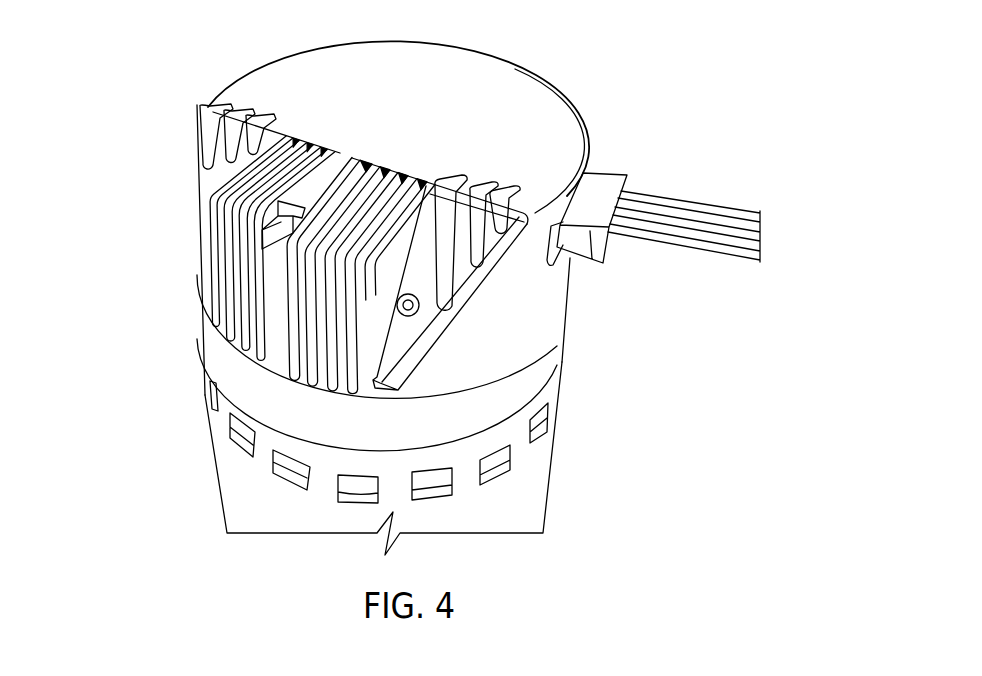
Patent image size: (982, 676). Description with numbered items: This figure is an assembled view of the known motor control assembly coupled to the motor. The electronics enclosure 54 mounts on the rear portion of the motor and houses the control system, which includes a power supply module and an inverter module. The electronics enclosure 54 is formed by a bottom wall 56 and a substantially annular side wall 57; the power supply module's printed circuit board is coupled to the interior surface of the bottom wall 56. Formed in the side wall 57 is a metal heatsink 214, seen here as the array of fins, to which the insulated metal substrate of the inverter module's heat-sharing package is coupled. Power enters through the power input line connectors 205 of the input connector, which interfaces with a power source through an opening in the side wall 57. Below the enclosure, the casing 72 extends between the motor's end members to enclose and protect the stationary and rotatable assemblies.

The electronics enclosure 54 is at (319, 210).
The bottom wall 56 is at (517, 80).
The side wall 57 is at (533, 303).
The casing 72 is at (220, 470).
The power input line connectors 205 is at (674, 198).
The metal heatsink 214 is at (210, 203).